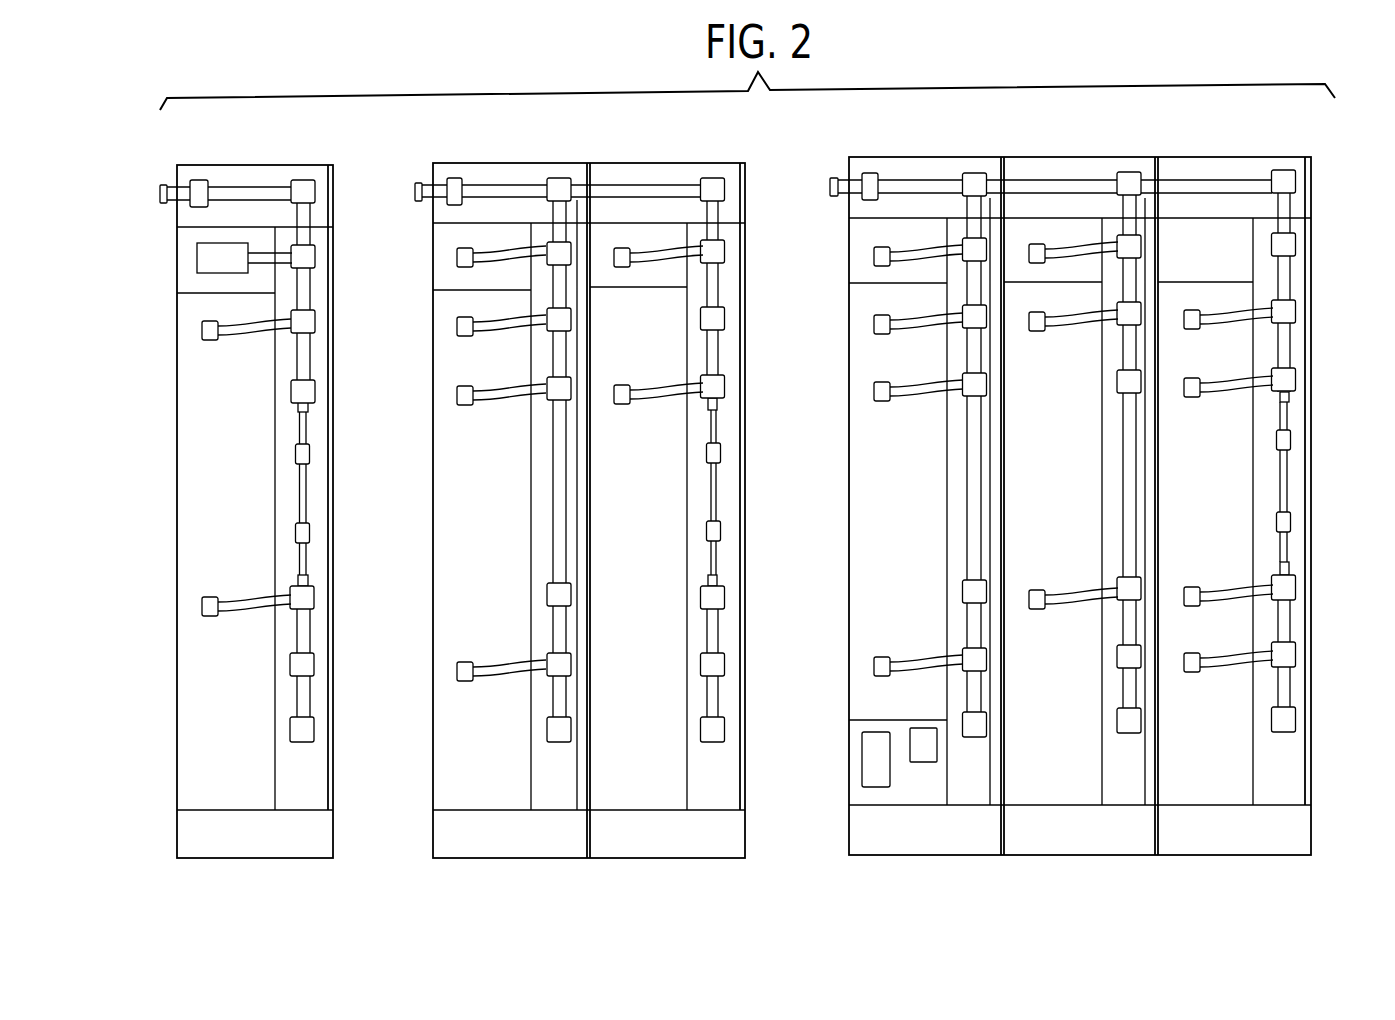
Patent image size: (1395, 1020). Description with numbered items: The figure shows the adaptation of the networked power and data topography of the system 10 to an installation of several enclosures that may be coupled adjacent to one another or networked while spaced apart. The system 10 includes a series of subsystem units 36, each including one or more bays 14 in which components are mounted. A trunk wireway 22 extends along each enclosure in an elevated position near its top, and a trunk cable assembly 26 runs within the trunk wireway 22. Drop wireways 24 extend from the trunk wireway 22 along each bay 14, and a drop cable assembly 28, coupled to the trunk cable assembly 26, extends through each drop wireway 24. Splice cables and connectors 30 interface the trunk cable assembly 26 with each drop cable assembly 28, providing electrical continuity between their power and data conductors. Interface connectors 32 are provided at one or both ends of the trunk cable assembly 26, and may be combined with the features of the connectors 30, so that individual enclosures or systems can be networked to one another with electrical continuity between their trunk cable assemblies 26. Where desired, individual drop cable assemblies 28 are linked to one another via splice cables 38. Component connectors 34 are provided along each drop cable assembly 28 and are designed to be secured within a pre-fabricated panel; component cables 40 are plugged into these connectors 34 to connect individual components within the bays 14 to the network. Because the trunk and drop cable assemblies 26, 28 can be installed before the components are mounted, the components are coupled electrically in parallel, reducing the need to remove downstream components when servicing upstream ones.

The system 10 is at (158, 838).
The bay 14 is at (192, 855).
The trunk wireway 22 is at (188, 168).
The drop wireway 24 is at (333, 301).
The trunk cable assembly 26 is at (227, 190).
The drop cable assembly 28 is at (297, 362).
The splice cable and connector 30 is at (568, 185).
The interface connector 32 is at (308, 180).
The component connector 34 is at (314, 255).
The subsystem unit 36 is at (257, 860).
The splice cable 38 is at (300, 497).
The component cable 40 is at (225, 343).